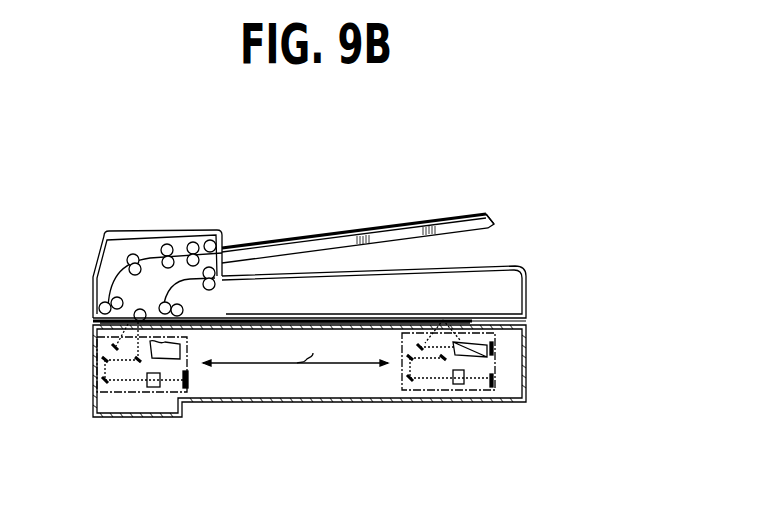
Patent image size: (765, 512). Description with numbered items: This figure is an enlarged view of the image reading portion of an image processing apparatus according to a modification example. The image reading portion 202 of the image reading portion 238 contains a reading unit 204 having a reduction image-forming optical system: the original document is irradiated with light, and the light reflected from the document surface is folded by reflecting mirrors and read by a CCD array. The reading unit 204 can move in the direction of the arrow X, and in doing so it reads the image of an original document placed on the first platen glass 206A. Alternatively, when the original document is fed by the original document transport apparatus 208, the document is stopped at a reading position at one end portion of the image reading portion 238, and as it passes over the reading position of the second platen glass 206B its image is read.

The image reading portion 202 is at (527, 367).
The reading unit 204 is at (152, 393).
The first platen glass 206A is at (348, 320).
The second platen glass 206B is at (136, 318).
The original document transport apparatus 208 is at (484, 263).
The image reading portion 238 is at (465, 192).